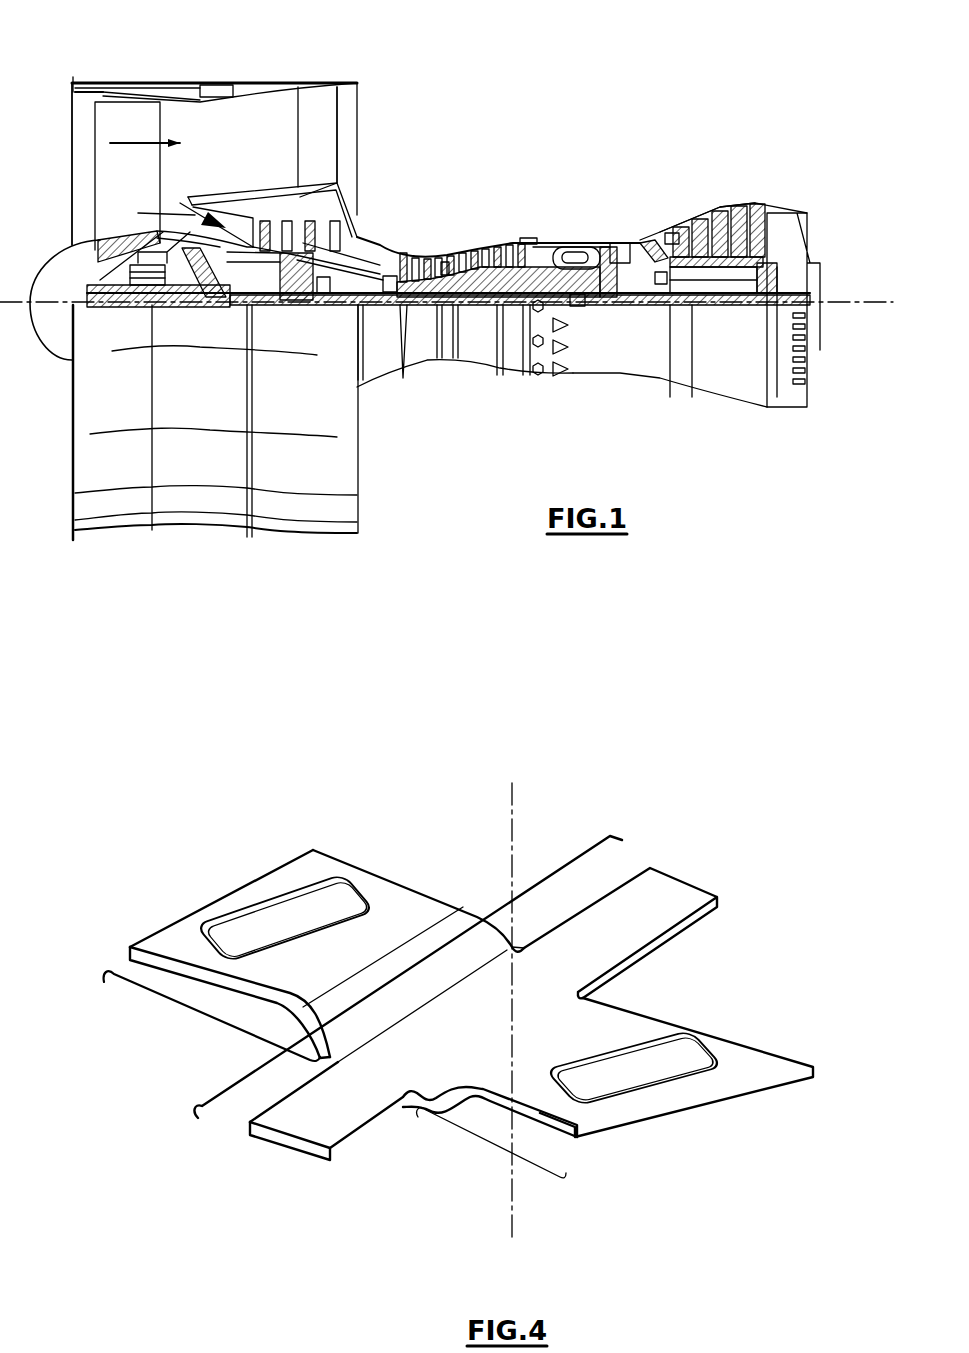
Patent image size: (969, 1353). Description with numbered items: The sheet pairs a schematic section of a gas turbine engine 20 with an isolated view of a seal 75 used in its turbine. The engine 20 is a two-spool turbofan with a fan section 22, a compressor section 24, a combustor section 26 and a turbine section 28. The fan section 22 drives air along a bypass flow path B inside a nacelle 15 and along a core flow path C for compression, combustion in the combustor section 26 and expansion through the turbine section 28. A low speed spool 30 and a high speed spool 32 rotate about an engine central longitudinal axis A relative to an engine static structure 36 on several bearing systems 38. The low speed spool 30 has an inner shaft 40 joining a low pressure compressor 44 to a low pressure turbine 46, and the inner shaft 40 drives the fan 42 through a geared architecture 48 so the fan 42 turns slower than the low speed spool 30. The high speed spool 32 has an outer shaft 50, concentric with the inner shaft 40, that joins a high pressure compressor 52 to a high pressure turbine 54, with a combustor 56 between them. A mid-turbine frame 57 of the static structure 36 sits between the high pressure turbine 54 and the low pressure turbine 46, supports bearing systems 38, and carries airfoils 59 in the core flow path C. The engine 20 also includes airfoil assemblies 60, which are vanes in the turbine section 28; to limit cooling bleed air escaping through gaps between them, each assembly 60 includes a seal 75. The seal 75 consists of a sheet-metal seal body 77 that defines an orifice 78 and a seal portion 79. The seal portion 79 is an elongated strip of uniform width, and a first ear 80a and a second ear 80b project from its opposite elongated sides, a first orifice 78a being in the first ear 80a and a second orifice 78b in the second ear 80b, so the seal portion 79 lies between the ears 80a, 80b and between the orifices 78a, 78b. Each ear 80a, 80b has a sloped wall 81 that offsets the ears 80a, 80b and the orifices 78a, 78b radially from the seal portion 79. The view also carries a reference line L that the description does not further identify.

In FIG. 1, the gas turbine engine 20 is at (578, 122).
In FIG. 1, the fan section 22 is at (160, 76).
In FIG. 1, the nacelle 15 is at (216, 87).
In FIG. 1, the fan 42 is at (139, 187).
In FIG. 1, the bypass flow path B is at (135, 138).
In FIG. 1, the core flow path C is at (173, 213).
In FIG. 1, the low pressure compressor 44 is at (297, 203).
In FIG. 1, the airfoil assembly 60 is at (323, 127).
In FIG. 1, the compressor section 24 is at (390, 226).
In FIG. 1, the high pressure compressor 52 is at (450, 253).
In FIG. 1, the high speed spool 32 is at (514, 256).
In FIG. 1, the combustor section 26 is at (572, 219).
In FIG. 1, the combustor 56 is at (570, 254).
In FIG. 1, the high pressure turbine 54 is at (620, 240).
In FIG. 1, the mid-turbine frame 57 is at (656, 234).
In FIG. 1, the turbine section 28 is at (688, 179).
In FIG. 1, the low pressure turbine 46 is at (717, 213).
In FIG. 1, the airfoils 59 is at (680, 278).
In FIG. 1, the bearing systems 38 is at (326, 306).
In FIG. 1, the outer shaft 50 is at (575, 300).
In FIG. 1, the geared architecture 48 is at (221, 305).
In FIG. 1, the inner shaft 40 is at (373, 377).
In FIG. 1, the low speed spool 30 is at (480, 310).
In FIG. 1, the engine static structure 36 is at (512, 372).
In FIG. 1, the engine central longitudinal axis A is at (883, 303).
In FIG. 4, the seal 75 is at (458, 1013).
In FIG. 4, the seal body 77 is at (440, 917).
In FIG. 4, the seal portion 79 is at (550, 868).
In FIG. 4, the sloped wall 81 is at (467, 937).
In FIG. 4, the first ear 80a is at (602, 1092).
In FIG. 4, the second ear 80b is at (314, 954).
In FIG. 4, the orifice 78 is at (659, 1066).
In FIG. 4, the first orifice 78a is at (700, 1057).
In FIG. 4, the second orifice 78b is at (357, 903).
In FIG. 4, the bracket axis L is at (513, 797).